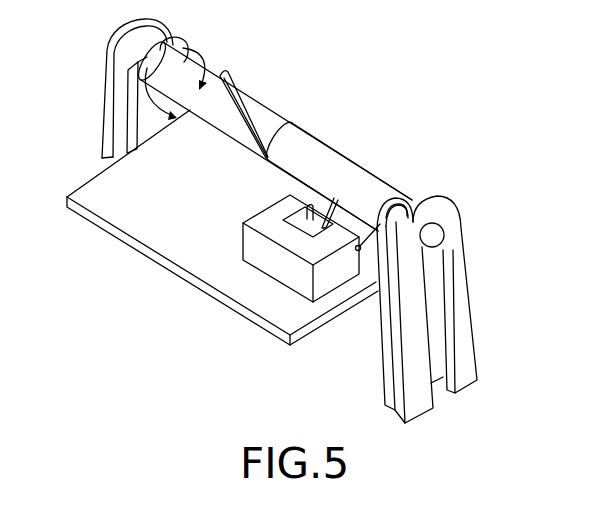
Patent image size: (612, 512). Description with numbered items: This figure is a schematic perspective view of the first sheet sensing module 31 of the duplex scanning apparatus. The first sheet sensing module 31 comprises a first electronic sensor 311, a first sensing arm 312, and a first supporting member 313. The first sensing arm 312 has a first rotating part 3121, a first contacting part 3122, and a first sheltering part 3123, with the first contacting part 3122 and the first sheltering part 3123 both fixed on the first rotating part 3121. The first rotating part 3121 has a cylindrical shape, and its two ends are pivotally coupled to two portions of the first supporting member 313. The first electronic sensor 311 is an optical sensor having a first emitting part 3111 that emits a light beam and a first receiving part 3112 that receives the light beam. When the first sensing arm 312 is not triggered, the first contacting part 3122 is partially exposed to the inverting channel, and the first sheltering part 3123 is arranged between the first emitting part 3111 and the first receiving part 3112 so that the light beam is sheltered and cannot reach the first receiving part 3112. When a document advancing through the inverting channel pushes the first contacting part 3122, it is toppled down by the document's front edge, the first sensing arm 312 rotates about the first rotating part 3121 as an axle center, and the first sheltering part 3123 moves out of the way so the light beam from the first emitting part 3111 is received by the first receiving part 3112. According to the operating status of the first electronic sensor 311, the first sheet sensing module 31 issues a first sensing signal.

The first sheet sensing module 31 is at (487, 66).
The first electronic sensor 311 is at (268, 258).
The first emitting part 3111 is at (376, 224).
The first receiving part 3112 is at (309, 212).
The first sensing arm 312 is at (190, 50).
The first rotating part 3121 is at (310, 152).
The first contacting part 3122 is at (260, 105).
The first sheltering part 3123 is at (322, 212).
The first supporting member 313 is at (120, 88).